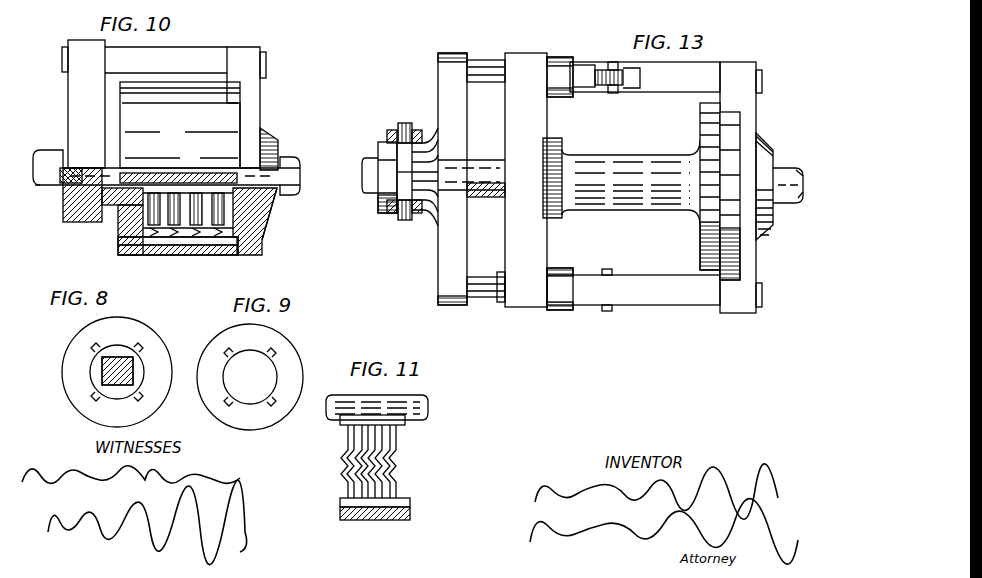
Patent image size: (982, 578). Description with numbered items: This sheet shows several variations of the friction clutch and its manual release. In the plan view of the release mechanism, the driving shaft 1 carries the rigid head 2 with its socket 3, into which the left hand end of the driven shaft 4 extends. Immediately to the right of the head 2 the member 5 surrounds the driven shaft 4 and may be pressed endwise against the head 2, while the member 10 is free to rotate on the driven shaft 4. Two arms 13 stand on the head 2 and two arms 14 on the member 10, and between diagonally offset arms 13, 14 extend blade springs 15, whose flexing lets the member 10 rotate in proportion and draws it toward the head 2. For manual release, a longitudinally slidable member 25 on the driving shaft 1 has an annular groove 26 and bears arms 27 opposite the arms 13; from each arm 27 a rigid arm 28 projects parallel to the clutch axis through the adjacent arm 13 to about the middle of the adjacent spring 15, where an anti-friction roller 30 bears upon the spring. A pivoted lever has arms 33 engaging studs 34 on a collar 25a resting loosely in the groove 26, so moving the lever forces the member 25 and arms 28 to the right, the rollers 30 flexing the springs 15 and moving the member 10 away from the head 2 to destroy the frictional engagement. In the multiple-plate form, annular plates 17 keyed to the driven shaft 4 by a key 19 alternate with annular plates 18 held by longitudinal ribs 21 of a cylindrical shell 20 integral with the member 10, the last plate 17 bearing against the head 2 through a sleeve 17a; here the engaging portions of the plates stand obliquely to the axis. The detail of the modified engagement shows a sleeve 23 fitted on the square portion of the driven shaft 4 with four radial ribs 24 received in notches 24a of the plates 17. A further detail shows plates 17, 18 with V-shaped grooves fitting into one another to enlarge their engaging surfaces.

In FIG. 10, the driving shaft 1 is at (50, 158).
In FIG. 13, the driving shaft 1 is at (362, 172).
In FIG. 10, the rigid head 2 is at (73, 217).
In FIG. 13, the rigid head 2 is at (517, 207).
In FIG. 10, the socket 3 is at (64, 186).
In FIG. 10, the driven shaft 4 is at (280, 172).
In FIG. 13, the driven shaft 4 is at (778, 176).
In FIG. 8, the driven shaft 4 is at (106, 386).
In FIG. 11, the driven shaft 4 is at (426, 407).
In FIG. 13, the member 5 is at (652, 191).
In FIG. 10, the member 10 is at (262, 208).
In FIG. 13, the member 10 is at (759, 231).
In FIG. 10, the arms 13 is at (80, 95).
In FIG. 13, the arms 13 is at (530, 65).
In FIG. 10, the arms 14 is at (248, 100).
In FIG. 13, the arms 14 is at (748, 107).
In FIG. 10, the blade spring 15 is at (205, 60).
In FIG. 13, the blade spring 15 is at (697, 84).
In FIG. 10, the annular plates 17 is at (240, 233).
In FIG. 8, the annular plates 17 is at (77, 353).
In FIG. 9, the annular plates 17 is at (212, 366).
In FIG. 11, the annular plates 17 is at (393, 473).
In FIG. 10, the sleeve 17a is at (113, 206).
In FIG. 10, the annular plates 18 is at (150, 240).
In FIG. 11, the annular plates 18 is at (345, 452).
In FIG. 10, the key 19 is at (180, 125).
In FIG. 11, the key 19 is at (405, 421).
In FIG. 10, the cylindrical shell 20 is at (198, 262).
In FIG. 11, the cylindrical shell 20 is at (380, 515).
In FIG. 10, the longitudinal ribs 21 is at (125, 242).
In FIG. 11, the longitudinal ribs 21 is at (405, 503).
In FIG. 8, the sleeve 23 is at (98, 373).
In FIG. 8, the longitudinal radial ribs 24 is at (140, 349).
In FIG. 9, the notches 24a is at (222, 399).
In FIG. 13, the longitudinally slidable member 25 is at (427, 216).
In FIG. 13, the collar 25a is at (400, 150).
In FIG. 13, the annular groove 26 is at (378, 207).
In FIG. 13, the arms 27 is at (452, 56).
In FIG. 13, the rigid arm 28 is at (483, 70).
In FIG. 13, the anti-friction roller 30 is at (625, 84).
In FIG. 13, the arms 33 is at (392, 137).
In FIG. 13, the studs 34 is at (398, 125).